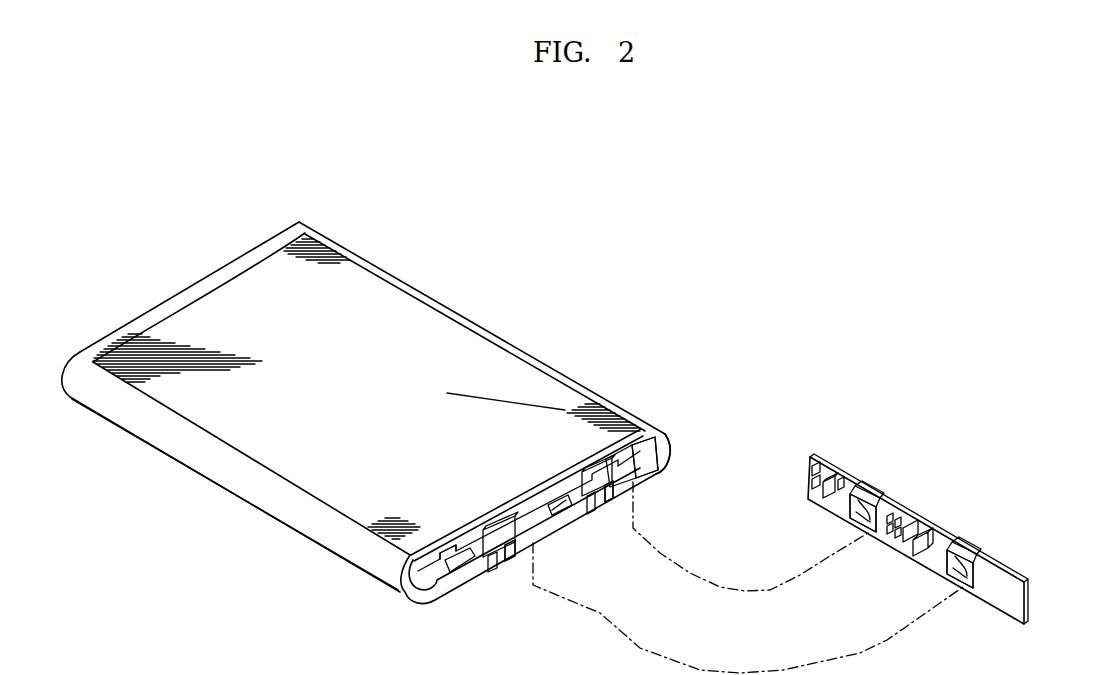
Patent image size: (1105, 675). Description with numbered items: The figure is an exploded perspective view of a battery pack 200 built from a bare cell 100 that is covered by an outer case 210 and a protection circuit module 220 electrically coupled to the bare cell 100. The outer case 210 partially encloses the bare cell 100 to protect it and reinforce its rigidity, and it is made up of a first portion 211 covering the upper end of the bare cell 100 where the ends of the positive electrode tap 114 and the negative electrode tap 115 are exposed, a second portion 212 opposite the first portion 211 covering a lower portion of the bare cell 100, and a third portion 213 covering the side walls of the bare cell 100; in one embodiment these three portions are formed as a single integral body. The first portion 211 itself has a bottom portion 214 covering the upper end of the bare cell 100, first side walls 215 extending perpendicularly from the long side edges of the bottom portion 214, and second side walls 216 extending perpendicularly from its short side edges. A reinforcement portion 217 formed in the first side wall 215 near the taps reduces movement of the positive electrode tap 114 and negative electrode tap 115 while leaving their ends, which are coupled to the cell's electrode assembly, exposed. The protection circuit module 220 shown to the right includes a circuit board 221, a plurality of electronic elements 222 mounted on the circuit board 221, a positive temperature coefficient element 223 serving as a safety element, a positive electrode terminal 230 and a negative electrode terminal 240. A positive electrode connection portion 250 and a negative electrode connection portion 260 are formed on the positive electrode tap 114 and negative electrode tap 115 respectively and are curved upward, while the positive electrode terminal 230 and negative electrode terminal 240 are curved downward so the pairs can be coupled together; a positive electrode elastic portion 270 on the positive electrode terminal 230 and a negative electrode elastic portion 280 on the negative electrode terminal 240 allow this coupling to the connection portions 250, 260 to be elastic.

The bare cell 100 is at (357, 288).
The positive electrode tap 114 is at (597, 500).
The negative electrode tap 115 is at (503, 562).
The battery pack 200 is at (941, 393).
The outer case 210 is at (558, 362).
The first portion 211 is at (385, 578).
The second portion 212 is at (115, 338).
The third portion 213 is at (258, 498).
The bottom portion 214 is at (520, 488).
The first side walls 215 is at (657, 470).
The second side walls 216 is at (660, 445).
The reinforcement portion 217 is at (562, 503).
The protection circuit module 220 is at (941, 498).
The circuit board 221 is at (1029, 602).
The electronic elements 222 is at (830, 480).
The positive temperature coefficient element 223 is at (926, 537).
The positive electrode terminal 230 is at (878, 483).
The negative electrode terminal 240 is at (983, 536).
The positive electrode connection portion 250 is at (625, 480).
The negative electrode connection portion 260 is at (507, 540).
The positive electrode elastic portion 270 is at (857, 512).
The negative electrode elastic portion 280 is at (963, 577).